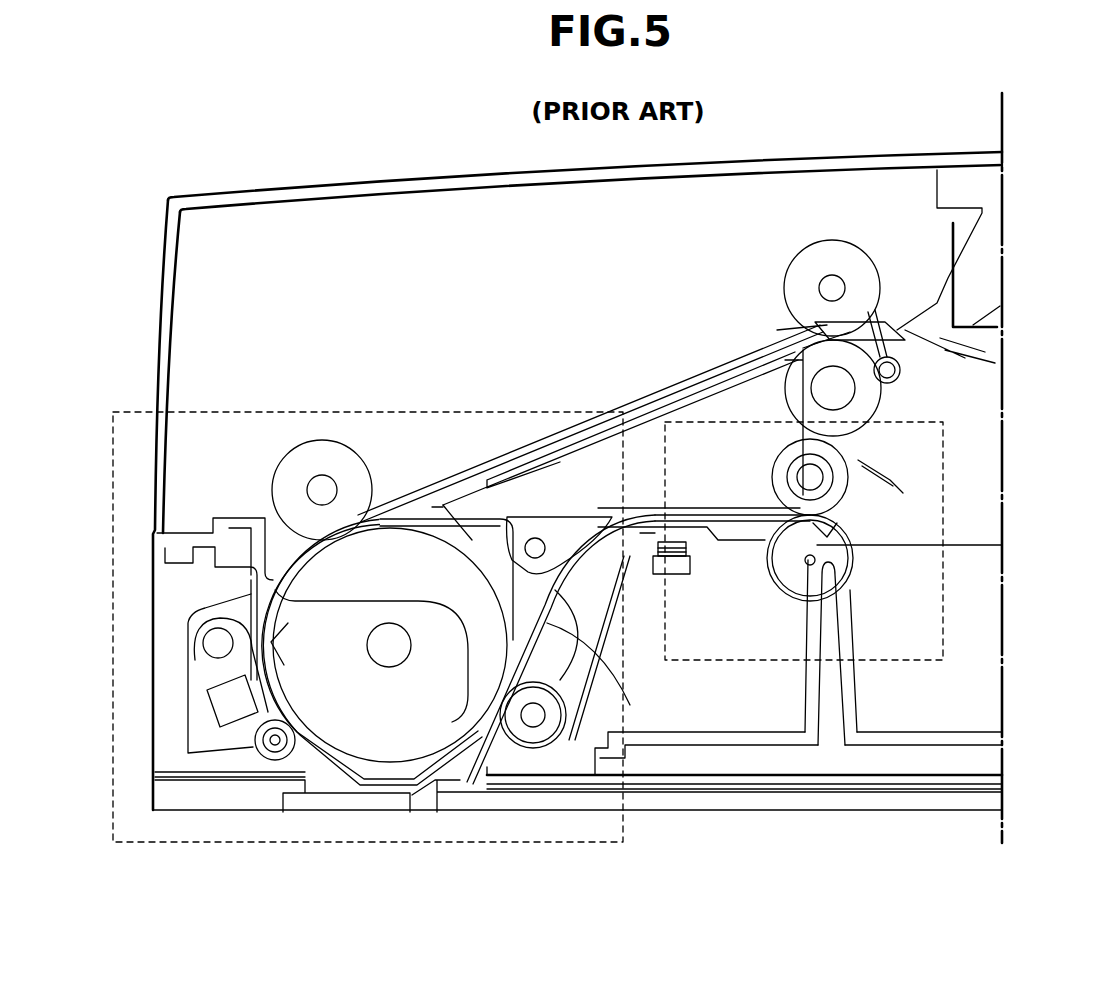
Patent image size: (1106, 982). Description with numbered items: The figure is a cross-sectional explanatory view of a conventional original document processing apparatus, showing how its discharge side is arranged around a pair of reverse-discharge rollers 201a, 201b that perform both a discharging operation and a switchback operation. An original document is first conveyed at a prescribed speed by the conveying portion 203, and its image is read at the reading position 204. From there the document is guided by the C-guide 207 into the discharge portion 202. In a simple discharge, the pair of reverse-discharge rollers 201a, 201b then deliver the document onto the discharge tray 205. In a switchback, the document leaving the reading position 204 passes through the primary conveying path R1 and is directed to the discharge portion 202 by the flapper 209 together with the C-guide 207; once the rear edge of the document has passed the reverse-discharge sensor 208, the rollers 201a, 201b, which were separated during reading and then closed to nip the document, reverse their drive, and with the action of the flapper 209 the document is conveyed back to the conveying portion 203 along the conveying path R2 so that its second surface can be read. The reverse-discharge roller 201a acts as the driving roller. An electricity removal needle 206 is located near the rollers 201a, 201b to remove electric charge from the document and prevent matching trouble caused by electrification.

The reverse-discharge roller 201a is at (850, 497).
The reverse-discharge roller 201b is at (850, 587).
The discharge portion 202 is at (890, 609).
The conveying portion 203 is at (533, 820).
The reading position 204 is at (382, 810).
The discharge tray 205 is at (898, 720).
The electricity removal needle 206 is at (858, 458).
The C-guide 207 is at (643, 440).
The reverse-discharge sensor 208 is at (668, 575).
The flapper 209 is at (547, 540).
The primary conveying path R1 is at (609, 677).
The conveying path R2 is at (473, 513).